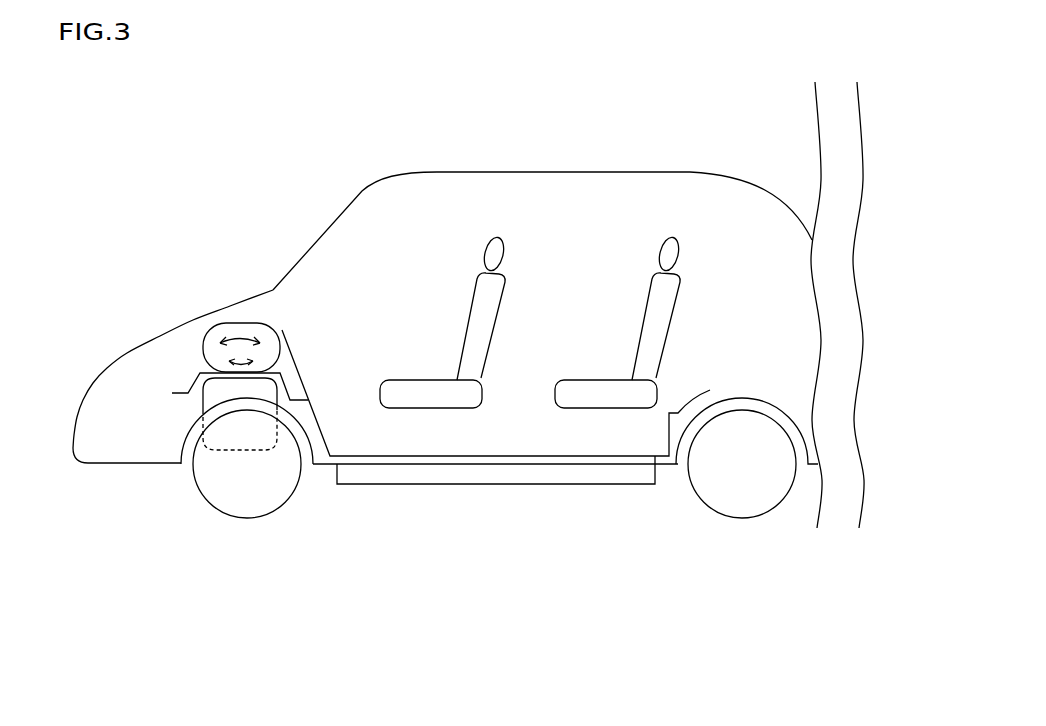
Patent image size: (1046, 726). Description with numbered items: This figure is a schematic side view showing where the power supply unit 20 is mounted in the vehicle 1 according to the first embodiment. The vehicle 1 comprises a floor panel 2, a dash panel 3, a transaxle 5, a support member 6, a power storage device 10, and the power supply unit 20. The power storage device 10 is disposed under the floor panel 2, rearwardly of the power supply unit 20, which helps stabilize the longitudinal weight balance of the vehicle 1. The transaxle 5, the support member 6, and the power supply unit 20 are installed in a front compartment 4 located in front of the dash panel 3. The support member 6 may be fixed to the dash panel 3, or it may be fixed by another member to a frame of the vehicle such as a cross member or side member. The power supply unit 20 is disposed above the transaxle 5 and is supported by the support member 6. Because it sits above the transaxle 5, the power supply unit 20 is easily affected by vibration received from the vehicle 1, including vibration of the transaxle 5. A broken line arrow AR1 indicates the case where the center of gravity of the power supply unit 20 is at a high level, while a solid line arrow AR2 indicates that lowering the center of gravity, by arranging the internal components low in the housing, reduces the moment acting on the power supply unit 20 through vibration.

The vehicle 1 is at (750, 106).
The floor panel 2 is at (508, 466).
The dash panel 3 is at (314, 415).
The front compartment 4 is at (151, 355).
The transaxle 5 is at (243, 450).
The support member 6 is at (185, 393).
The power storage device 10 is at (467, 485).
The power supply unit 20 is at (241, 323).
The broken line arrow AR1 is at (251, 335).
The solid line arrow AR2 is at (236, 360).